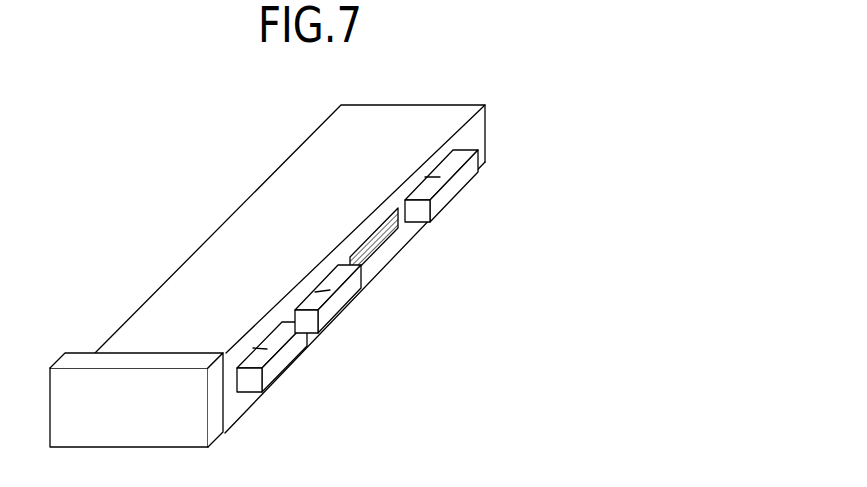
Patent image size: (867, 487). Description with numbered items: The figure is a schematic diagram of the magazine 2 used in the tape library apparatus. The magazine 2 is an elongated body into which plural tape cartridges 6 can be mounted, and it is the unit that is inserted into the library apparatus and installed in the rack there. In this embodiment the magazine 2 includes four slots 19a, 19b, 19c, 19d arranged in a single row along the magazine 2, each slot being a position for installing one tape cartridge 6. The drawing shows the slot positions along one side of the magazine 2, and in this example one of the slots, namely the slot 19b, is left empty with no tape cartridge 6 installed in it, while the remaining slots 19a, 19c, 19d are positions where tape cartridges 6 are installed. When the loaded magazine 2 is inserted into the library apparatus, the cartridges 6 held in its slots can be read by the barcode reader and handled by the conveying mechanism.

The magazine 2 is at (209, 214).
The tape cartridge 6 is at (428, 178).
The slot 19a is at (492, 180).
The slot 19b is at (434, 238).
The slot 19c is at (376, 303).
The slot 19d is at (319, 363).